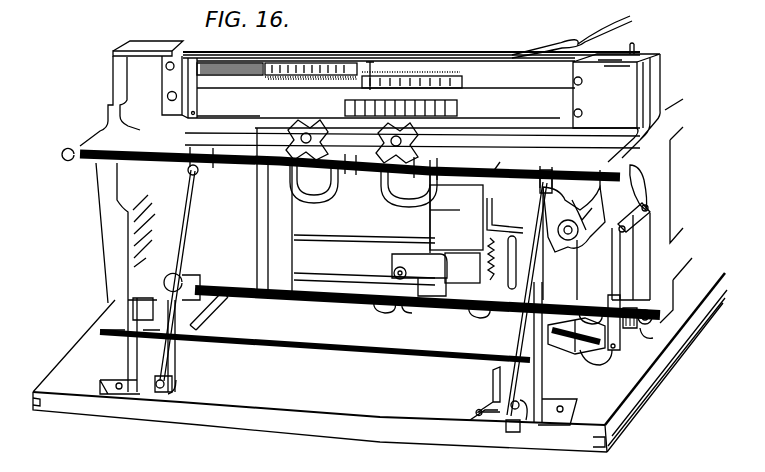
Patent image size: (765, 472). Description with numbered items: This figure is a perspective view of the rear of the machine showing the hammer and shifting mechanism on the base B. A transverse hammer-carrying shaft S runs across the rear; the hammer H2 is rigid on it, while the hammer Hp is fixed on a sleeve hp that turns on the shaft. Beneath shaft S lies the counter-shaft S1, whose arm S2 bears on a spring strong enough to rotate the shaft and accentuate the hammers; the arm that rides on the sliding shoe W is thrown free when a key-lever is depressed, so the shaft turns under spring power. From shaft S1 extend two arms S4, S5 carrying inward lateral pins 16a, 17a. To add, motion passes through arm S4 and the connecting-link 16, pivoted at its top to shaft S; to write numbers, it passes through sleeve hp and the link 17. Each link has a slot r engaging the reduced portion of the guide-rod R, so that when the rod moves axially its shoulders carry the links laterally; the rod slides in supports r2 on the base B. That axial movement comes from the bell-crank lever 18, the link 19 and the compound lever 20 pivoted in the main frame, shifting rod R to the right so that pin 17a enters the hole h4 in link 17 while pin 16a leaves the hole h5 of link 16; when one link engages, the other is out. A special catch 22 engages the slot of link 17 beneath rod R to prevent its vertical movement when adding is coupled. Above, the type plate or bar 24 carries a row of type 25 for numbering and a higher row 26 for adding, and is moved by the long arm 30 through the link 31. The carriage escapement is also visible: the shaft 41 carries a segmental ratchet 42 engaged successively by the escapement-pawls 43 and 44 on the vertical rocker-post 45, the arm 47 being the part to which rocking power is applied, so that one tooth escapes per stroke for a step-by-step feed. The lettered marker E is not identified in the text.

The connecting-link 16 is at (181, 224).
The lateral pin 16a is at (172, 378).
The link 17 is at (524, 260).
The lateral pin 17a is at (502, 431).
The bell-crank lever 18 is at (584, 352).
The link 19 is at (626, 334).
The compound lever 20 is at (650, 217).
The special catch 22 is at (492, 378).
The type plate or bar 24 is at (372, 60).
The row of type 25 is at (412, 72).
The row of type 26 is at (333, 62).
The long arm 30 is at (595, 30).
The link 31 is at (482, 56).
The shaft 41 is at (574, 242).
The segmental ratchet 42 is at (574, 243).
The escapement-pawl 43 is at (505, 215).
The escapement-pawl 44 is at (497, 232).
The vertical rocker-post 45 is at (462, 268).
The arm 47 is at (390, 262).
The hammer-carrying shaft S is at (341, 157).
The counter-shaft S1 is at (412, 294).
The arm S2 is at (606, 303).
The arm S4 is at (212, 316).
The arm S5 is at (528, 424).
The hammer Hp is at (388, 199).
The hammer H2 is at (274, 210).
The sleeve hp is at (486, 174).
The hole h4 is at (492, 400).
The hole h5 is at (186, 390).
The counter E is at (345, 108).
The sliding right-angled shoe W is at (432, 287).
The guide-rod R is at (366, 353).
The slot r is at (176, 352).
The support r2 is at (128, 356).
The base B is at (668, 365).